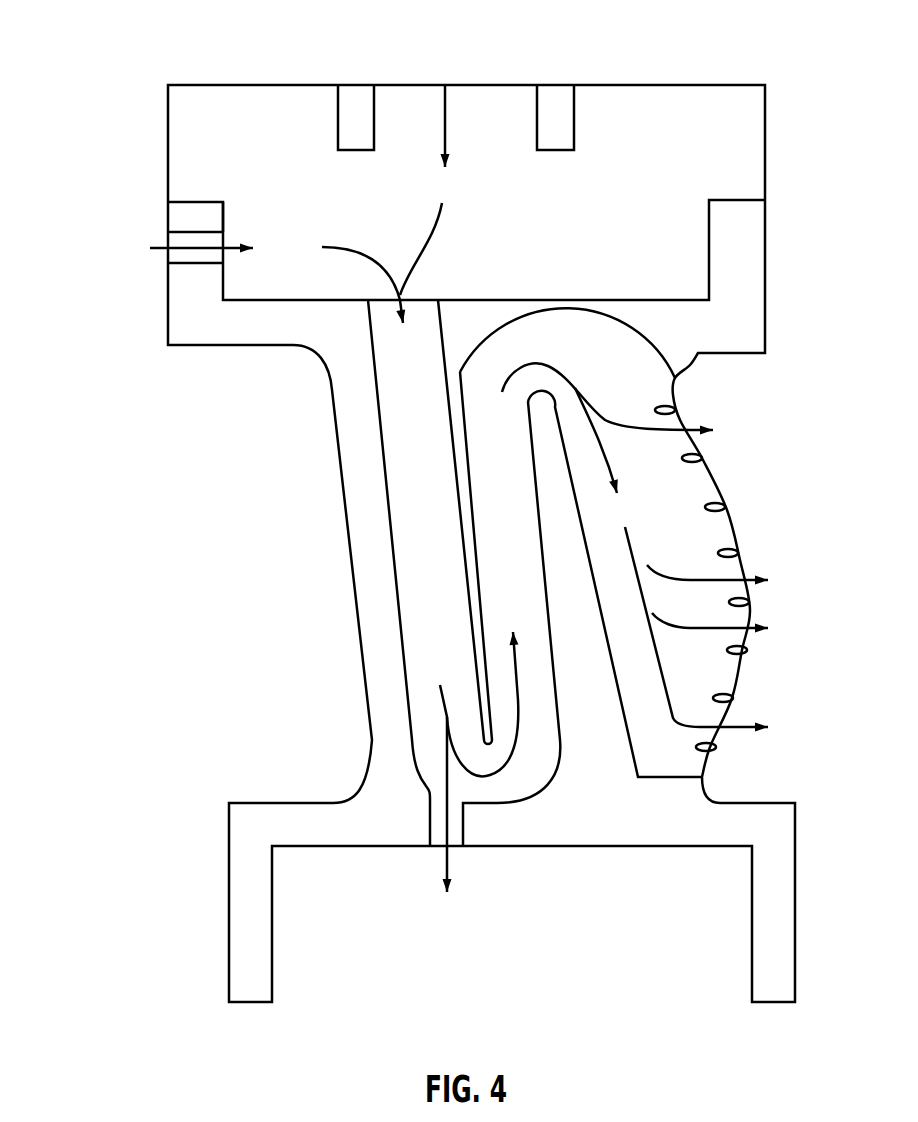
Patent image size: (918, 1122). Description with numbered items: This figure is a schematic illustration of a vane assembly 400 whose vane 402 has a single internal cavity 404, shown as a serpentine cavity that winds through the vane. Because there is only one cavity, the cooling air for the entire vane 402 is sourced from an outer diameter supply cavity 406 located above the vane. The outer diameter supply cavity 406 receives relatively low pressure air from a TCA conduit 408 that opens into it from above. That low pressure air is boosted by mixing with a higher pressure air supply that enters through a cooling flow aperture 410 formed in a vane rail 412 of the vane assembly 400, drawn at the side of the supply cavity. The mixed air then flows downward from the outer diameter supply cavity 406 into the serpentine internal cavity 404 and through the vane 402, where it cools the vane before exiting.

The vane assembly 400 is at (135, 38).
The vane 402 is at (337, 355).
The internal cavity 404 is at (442, 488).
The outer diameter supply cavity 406 is at (512, 234).
The TCA conduit 408 is at (547, 133).
The cooling flow aperture 410 is at (165, 238).
The vane rail 412 is at (224, 213).